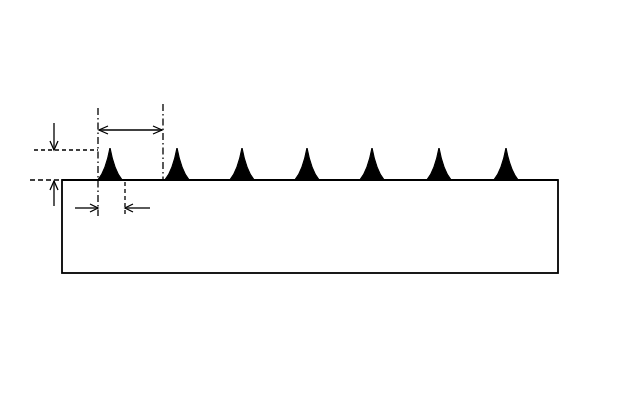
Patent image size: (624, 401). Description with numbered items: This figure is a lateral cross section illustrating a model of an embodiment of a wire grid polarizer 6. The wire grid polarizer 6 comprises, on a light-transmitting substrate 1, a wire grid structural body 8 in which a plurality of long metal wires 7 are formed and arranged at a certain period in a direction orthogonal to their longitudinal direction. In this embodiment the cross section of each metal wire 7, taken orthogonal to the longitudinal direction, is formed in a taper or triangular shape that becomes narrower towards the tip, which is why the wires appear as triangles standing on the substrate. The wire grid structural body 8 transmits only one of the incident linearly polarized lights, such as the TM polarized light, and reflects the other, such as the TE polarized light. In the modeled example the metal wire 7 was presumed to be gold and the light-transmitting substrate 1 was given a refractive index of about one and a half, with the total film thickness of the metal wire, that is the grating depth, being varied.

The wire grid polarizer 6 is at (65, 86).
The light-transmitting substrate 1 is at (82, 273).
The metal wire 7 is at (117, 167).
The wire grid structural body 8 is at (188, 180).